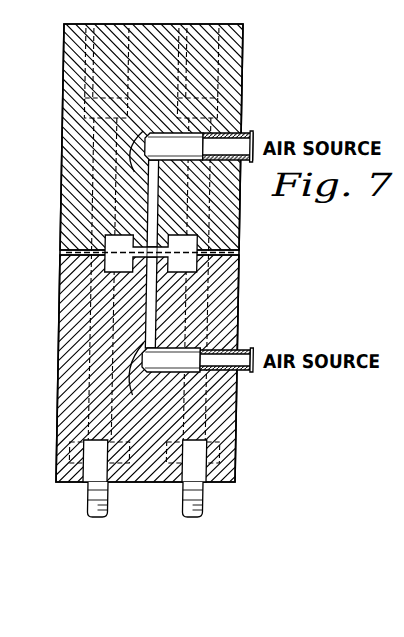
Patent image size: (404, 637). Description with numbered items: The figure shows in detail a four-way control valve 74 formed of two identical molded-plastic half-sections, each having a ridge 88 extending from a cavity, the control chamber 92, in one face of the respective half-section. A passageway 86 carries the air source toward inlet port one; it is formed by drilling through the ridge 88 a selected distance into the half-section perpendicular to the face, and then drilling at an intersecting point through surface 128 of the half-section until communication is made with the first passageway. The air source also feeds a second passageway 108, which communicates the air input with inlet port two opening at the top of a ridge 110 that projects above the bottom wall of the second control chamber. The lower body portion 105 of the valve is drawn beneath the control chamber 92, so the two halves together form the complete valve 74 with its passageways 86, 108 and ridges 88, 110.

The four-way control valve 74 is at (52, 103).
The surface of the half-section 128 is at (243, 85).
The lower block 105 is at (71, 287).
The passageway 86 is at (170, 133).
The ridge 88 is at (169, 236).
The control chamber 92 is at (107, 247).
The ridge 110 is at (166, 258).
The passageway 108 is at (176, 363).